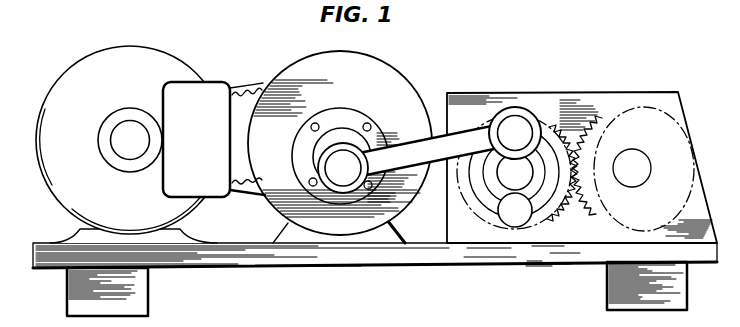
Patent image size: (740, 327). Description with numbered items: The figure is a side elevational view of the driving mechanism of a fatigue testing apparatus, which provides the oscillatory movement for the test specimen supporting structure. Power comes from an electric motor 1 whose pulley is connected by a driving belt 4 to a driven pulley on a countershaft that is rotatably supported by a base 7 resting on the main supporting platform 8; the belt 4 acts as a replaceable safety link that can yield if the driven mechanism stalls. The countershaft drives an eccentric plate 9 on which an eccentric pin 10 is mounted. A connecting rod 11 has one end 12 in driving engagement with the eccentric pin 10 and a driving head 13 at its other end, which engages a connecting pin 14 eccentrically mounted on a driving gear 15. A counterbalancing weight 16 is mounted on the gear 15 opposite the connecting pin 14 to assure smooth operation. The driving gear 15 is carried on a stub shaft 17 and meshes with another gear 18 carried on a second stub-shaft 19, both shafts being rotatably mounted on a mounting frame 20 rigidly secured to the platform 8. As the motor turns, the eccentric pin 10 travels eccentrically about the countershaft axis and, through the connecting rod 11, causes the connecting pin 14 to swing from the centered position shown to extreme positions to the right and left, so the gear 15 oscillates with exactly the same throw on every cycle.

The electric motor 1 is at (48, 118).
The driving belt 4 is at (240, 192).
The base 7 is at (377, 238).
The main supporting platform 8 is at (456, 253).
The eccentric plate 9 is at (345, 135).
The eccentric pin 10 is at (340, 182).
The connecting rod 11 is at (429, 163).
The end of connecting rod 12 is at (321, 170).
The driving head 13 is at (522, 112).
The connecting pin 14 is at (513, 122).
The driving gear 15 is at (548, 130).
The counterbalancing weight 16 is at (522, 218).
The stub shaft 17 is at (523, 171).
The gear 18 is at (683, 166).
The second stub-shaft 19 is at (646, 177).
The mounting frame 20 is at (618, 97).